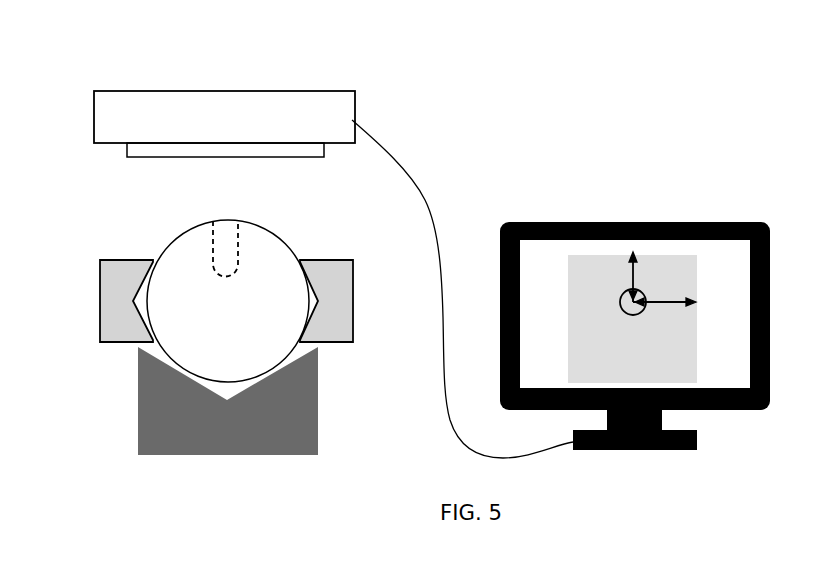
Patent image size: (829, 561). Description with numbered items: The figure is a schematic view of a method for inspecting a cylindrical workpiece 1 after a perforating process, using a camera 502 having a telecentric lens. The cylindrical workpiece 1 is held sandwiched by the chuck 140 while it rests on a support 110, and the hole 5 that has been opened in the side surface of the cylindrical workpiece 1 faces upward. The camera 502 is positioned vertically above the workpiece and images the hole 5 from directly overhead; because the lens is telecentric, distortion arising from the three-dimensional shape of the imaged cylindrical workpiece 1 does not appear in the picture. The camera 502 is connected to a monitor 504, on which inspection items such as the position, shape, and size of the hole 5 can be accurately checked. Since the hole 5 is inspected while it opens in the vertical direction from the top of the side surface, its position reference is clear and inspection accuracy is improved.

The camera 502 is at (292, 90).
The display monitor 504 is at (710, 222).
The chuck 140 is at (123, 248).
The cylindrical workpiece 1 is at (272, 233).
The hole 5 is at (235, 247).
The support base 110 is at (143, 403).